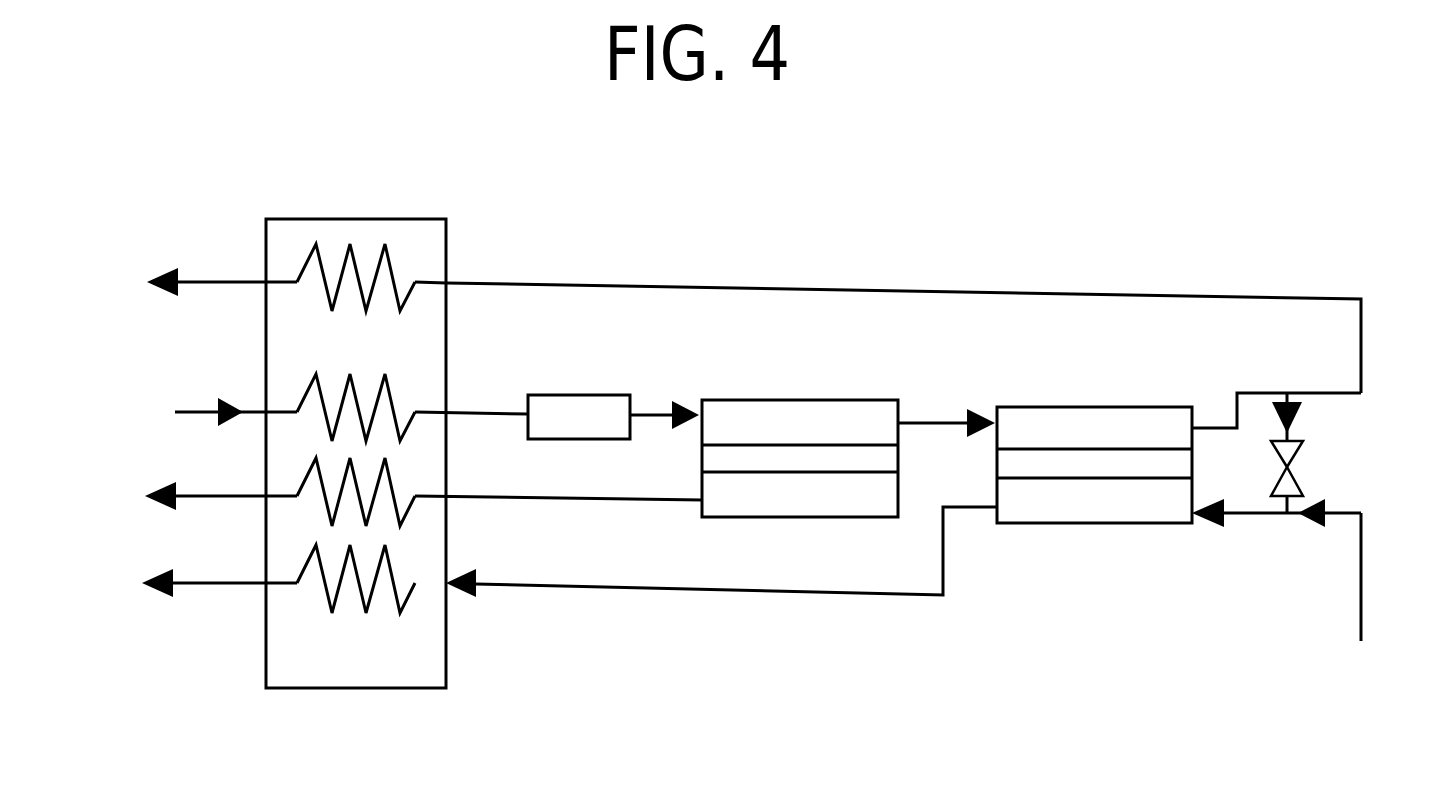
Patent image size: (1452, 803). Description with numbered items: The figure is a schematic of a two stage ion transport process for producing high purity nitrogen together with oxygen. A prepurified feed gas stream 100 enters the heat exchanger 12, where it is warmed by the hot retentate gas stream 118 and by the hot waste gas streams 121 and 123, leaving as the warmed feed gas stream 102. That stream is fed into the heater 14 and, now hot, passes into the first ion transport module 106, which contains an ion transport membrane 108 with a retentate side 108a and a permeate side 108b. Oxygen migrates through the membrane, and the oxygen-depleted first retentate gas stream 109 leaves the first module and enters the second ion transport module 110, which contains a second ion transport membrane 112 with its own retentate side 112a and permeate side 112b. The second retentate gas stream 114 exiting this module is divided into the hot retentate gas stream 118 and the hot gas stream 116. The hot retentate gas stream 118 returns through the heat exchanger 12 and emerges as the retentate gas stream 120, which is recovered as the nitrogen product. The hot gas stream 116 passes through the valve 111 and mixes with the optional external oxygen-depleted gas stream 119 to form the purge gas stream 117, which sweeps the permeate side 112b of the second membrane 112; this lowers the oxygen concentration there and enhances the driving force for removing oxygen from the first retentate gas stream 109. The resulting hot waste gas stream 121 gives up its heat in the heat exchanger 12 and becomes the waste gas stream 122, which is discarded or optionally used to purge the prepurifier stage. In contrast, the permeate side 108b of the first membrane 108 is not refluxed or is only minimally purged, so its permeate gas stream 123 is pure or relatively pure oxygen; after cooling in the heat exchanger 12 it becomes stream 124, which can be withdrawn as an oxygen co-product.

The heat exchanger 12 is at (452, 253).
The heater 14 is at (566, 395).
The feed gas inlet line 100 is at (202, 411).
The warmed feed gas stream 102 is at (480, 413).
The first ion transport module 106 is at (723, 448).
The ion transport membrane 108 is at (723, 448).
The retentate side 108a is at (783, 445).
The permeate side 108b is at (822, 473).
The first retentate gas stream 109 is at (926, 421).
The second ion transport module 110 is at (1076, 465).
The valve 111 is at (1293, 455).
The ion transport membrane 112 is at (1076, 465).
The retentate side 112a is at (1143, 452).
The permeate side 112b is at (1095, 478).
The second retentate gas stream 114 is at (1258, 392).
The hot gas stream 116 is at (1293, 433).
The purge gas stream 117 is at (1241, 513).
The hot retentate gas stream 118 is at (1193, 298).
The optional gas stream 119 is at (1361, 600).
The retentate gas stream 120 is at (217, 282).
The hot waste gas stream 121 is at (717, 597).
The waste gas stream 122 is at (245, 540).
The permeate gas stream 123 is at (585, 500).
The oxygen co-product stream 124 is at (208, 496).